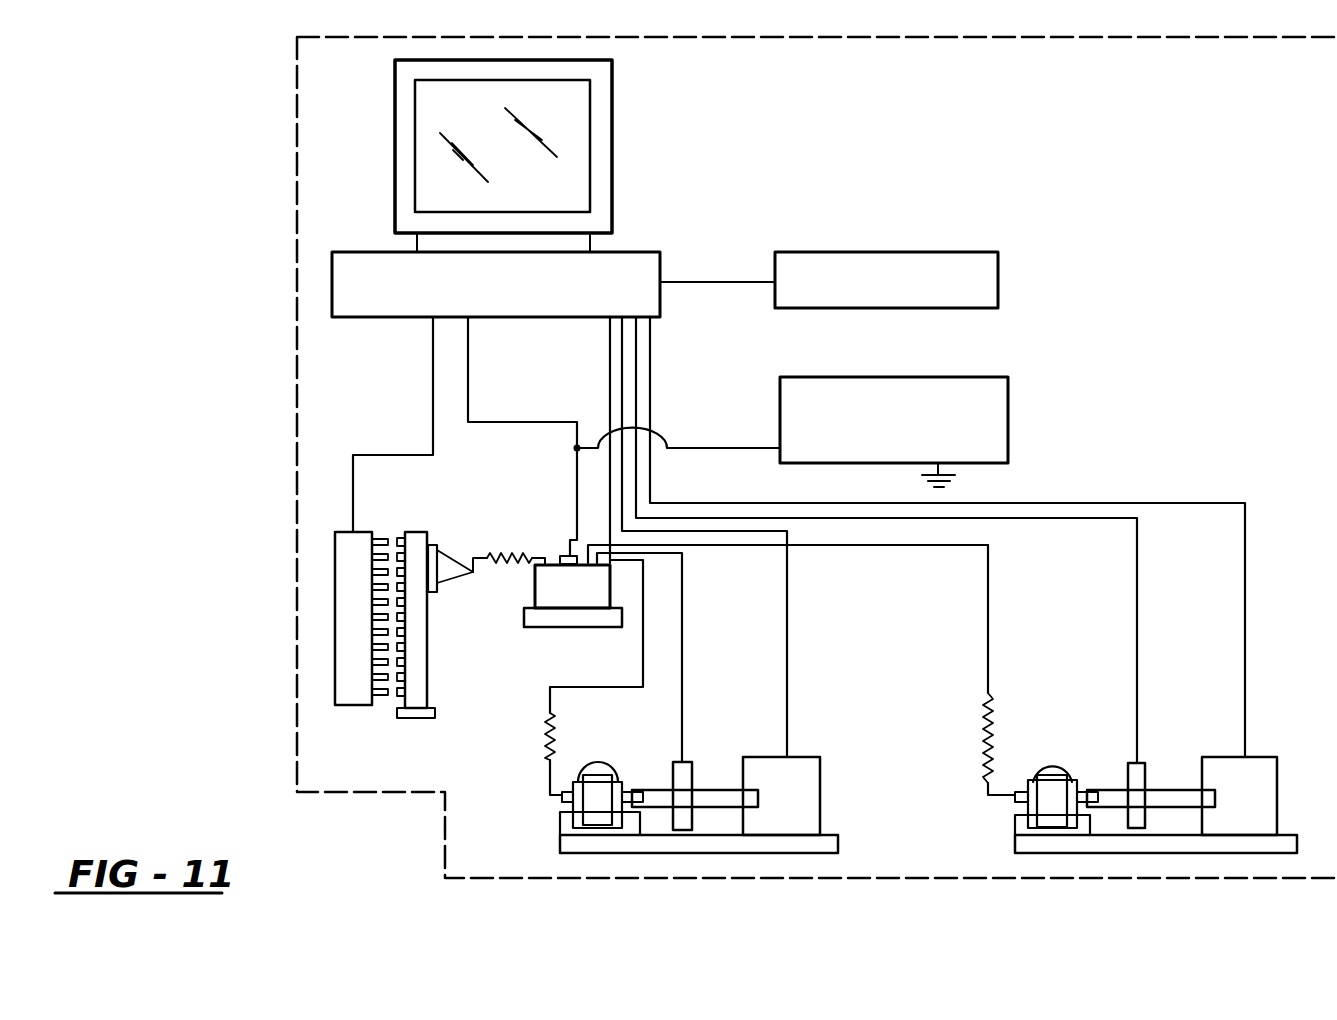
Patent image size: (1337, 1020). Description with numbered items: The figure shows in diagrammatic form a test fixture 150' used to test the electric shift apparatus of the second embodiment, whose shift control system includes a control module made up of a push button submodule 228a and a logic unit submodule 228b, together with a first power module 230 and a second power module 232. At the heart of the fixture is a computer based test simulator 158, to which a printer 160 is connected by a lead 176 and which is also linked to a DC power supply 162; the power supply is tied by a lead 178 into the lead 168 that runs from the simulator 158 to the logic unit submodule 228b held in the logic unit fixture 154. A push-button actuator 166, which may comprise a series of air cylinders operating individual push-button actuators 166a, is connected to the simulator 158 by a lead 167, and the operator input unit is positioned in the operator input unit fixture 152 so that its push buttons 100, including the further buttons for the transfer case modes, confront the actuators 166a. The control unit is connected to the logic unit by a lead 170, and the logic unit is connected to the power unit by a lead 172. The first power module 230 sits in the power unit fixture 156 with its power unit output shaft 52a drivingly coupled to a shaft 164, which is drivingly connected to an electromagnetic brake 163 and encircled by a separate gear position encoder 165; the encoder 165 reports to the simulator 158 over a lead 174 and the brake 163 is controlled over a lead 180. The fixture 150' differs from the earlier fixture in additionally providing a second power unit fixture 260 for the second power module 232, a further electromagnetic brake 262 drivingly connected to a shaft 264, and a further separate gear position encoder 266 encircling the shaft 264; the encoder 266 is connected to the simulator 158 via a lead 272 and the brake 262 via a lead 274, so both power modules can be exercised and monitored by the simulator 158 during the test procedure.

The test fixture 150' is at (765, 457).
The computer based test simulator 158 is at (655, 252).
The printer 160 is at (880, 252).
The printer cable 176 is at (718, 282).
The DC power supply 162 is at (1008, 410).
The lead 178 is at (737, 447).
The lead 167 is at (433, 370).
The lead 168 is at (468, 378).
The push-button actuator 166 is at (353, 705).
The push-button actuators 166a is at (380, 532).
The push buttons 100 is at (405, 532).
The operator input unit fixture 152 is at (428, 718).
The push button submodule 228a is at (445, 537).
The lead 170 is at (478, 562).
The logic unit fixture 154 is at (565, 627).
The logic unit submodule 228b is at (625, 593).
The lead 172 is at (553, 687).
The lead 174 is at (682, 645).
The lead 180 is at (787, 640).
The lead 272 is at (1137, 606).
The lead 274 is at (1247, 602).
The first power module 230 is at (601, 756).
The power unit output shaft 52a is at (636, 790).
The shaft 164 is at (722, 790).
The separate gear position encoder 165 is at (688, 762).
The electromagnetic brake 163 is at (820, 760).
The power unit fixture 156 is at (558, 840).
The second power module 232 is at (1074, 752).
The shaft 264 is at (1172, 790).
The further separate gear position encoder 266 is at (1133, 763).
The further electromagnetic brake 262 is at (1280, 765).
The second power unit fixture 260 is at (1015, 845).